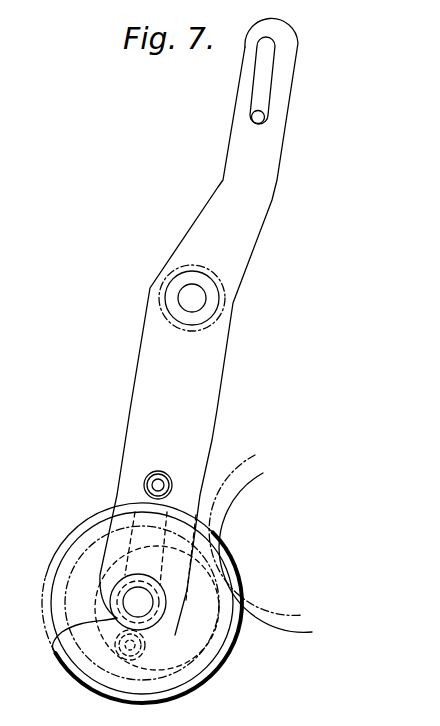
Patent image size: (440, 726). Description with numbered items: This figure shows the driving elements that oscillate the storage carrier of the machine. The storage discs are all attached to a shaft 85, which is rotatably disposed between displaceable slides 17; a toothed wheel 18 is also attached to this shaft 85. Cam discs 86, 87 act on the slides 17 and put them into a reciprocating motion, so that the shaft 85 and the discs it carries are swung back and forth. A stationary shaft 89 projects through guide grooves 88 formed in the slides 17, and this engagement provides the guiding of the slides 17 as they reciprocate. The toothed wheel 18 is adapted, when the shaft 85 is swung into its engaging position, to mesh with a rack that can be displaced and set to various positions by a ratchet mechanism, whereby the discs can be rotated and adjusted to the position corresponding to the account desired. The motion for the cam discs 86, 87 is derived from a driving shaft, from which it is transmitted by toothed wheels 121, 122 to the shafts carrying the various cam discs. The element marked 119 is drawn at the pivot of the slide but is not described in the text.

The slides 17 is at (147, 378).
The toothed wheel 18 is at (167, 322).
The shaft 85 is at (203, 308).
The cam disc 86 is at (207, 678).
The cam disc 87 is at (215, 633).
The guide grooves 88 is at (261, 91).
The stationary shaft 89 is at (252, 118).
The pivot shaft 119 is at (127, 604).
The toothed wheel 121 is at (75, 530).
The toothed wheel 122 is at (291, 628).